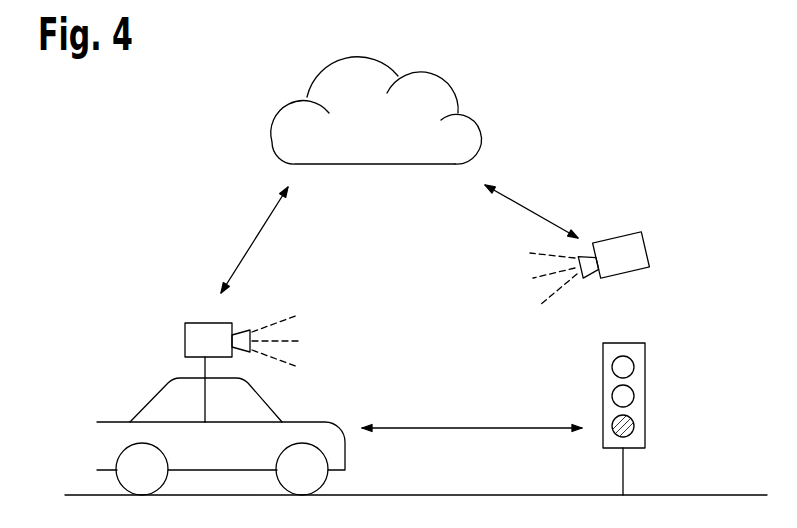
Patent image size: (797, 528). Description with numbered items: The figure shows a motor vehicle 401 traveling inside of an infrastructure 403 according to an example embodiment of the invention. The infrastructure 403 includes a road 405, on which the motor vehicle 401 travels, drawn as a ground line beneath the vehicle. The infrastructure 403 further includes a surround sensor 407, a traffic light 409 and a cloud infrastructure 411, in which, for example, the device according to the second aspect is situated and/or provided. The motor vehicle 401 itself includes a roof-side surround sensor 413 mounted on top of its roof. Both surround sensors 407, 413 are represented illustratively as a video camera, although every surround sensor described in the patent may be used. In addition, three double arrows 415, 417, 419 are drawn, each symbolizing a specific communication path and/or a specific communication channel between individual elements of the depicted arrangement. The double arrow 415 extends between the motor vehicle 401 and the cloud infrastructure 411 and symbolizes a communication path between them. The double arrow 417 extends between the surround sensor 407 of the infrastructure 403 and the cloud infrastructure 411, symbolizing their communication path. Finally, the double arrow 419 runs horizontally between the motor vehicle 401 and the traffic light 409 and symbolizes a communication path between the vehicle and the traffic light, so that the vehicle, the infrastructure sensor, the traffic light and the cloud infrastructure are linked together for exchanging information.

The motor vehicle 401 is at (160, 388).
The infrastructure 403 is at (150, 164).
The road 405 is at (745, 493).
The surround sensor 407 is at (647, 238).
The traffic light 409 is at (645, 365).
The cloud infrastructure 411 is at (482, 137).
The roof-side surround sensor 413 is at (185, 343).
The double arrow 415 is at (263, 227).
The double arrow 417 is at (535, 217).
The double arrow 419 is at (448, 428).